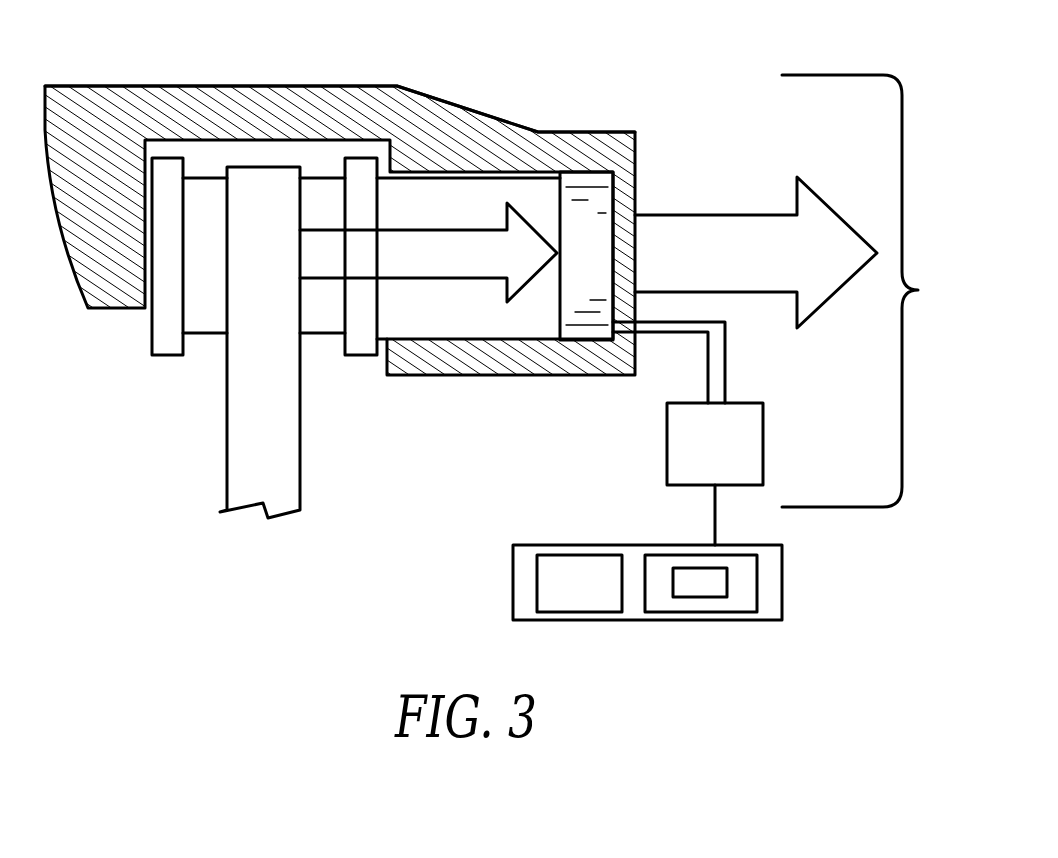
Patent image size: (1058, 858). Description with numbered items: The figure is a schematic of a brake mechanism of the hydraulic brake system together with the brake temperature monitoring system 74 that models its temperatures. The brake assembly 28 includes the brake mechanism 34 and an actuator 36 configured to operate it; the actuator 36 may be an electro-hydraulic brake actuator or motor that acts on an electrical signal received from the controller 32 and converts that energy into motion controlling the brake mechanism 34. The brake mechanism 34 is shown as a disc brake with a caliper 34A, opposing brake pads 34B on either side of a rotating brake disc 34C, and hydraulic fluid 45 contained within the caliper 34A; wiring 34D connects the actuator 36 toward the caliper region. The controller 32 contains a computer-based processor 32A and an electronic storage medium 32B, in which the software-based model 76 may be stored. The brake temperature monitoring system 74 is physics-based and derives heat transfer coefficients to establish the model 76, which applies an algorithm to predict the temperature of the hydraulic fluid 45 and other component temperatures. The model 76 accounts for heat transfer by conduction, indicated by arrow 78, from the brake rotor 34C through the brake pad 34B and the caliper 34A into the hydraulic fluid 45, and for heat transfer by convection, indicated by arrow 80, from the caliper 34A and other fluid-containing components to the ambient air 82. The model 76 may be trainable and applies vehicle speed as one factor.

The brake assembly 28 is at (918, 290).
The controller 32 is at (783, 575).
The computer-based processor 32A is at (537, 585).
The electronic storage medium 32B is at (743, 612).
The brake mechanism 34 is at (513, 88).
The caliper 34A is at (320, 86).
The brake pads 34B is at (208, 338).
The rotating brake disc 34C is at (263, 200).
The wiring 34D is at (725, 358).
The actuator 36 is at (732, 458).
The hydraulic fluid 45 is at (588, 232).
The brake temperature monitoring system 74 is at (217, 563).
The model 76 is at (696, 597).
The conduction arrow 78 is at (442, 280).
The convection arrow 80 is at (752, 215).
The ambient air 82 is at (731, 164).